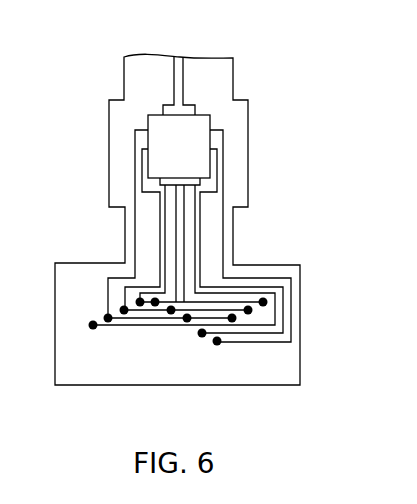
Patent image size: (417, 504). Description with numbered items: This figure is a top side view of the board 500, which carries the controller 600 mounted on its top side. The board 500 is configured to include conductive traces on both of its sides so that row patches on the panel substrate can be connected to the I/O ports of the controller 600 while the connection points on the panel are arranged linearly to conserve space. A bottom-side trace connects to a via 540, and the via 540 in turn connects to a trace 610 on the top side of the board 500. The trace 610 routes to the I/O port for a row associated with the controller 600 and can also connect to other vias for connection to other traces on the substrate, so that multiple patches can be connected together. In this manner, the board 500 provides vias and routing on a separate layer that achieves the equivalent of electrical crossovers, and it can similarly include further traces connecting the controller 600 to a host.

The board 500 is at (215, 45).
The controller 600 is at (212, 127).
The via 540 is at (107, 314).
The trace 610 is at (165, 318).